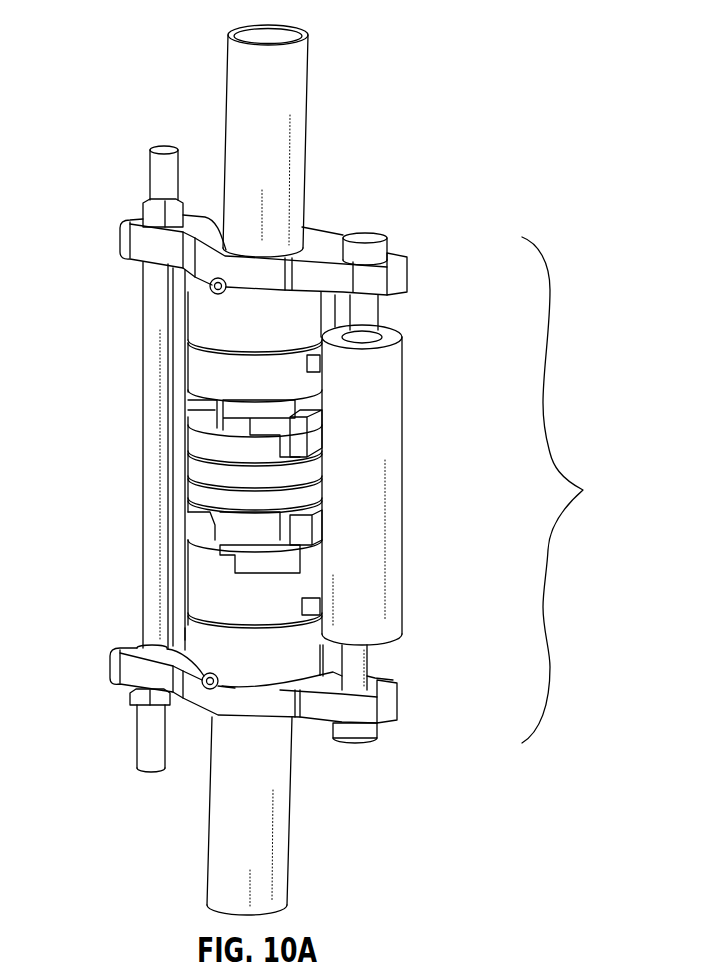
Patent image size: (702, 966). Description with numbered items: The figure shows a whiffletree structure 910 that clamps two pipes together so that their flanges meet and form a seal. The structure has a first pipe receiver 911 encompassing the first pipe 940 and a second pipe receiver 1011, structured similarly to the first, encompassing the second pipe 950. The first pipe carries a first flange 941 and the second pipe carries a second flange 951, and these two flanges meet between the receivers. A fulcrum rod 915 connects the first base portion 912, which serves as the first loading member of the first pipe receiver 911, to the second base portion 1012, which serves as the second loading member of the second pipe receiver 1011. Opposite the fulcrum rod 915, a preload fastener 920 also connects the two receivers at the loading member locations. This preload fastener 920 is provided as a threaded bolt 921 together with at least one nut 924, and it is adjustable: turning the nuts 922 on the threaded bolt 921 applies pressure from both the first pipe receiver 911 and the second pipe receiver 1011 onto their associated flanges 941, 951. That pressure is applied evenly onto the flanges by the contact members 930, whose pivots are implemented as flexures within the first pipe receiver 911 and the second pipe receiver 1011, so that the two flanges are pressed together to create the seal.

The whiffletree structure 910 is at (579, 490).
The first pipe receiver 911 is at (213, 233).
The first base portion 912 is at (320, 245).
The fulcrum rod 915 is at (388, 492).
The preload fastener 920 is at (209, 459).
The bolt 921 is at (155, 347).
The nut 922 is at (130, 697).
The nut 924 is at (143, 212).
The contact member 930 is at (197, 438).
The first pipe 940 is at (288, 88).
The first flange 941 is at (305, 473).
The second pipe 950 is at (275, 866).
The second flange 951 is at (310, 493).
The second pipe receiver 1011 is at (198, 709).
The second base portion 1012 is at (307, 708).